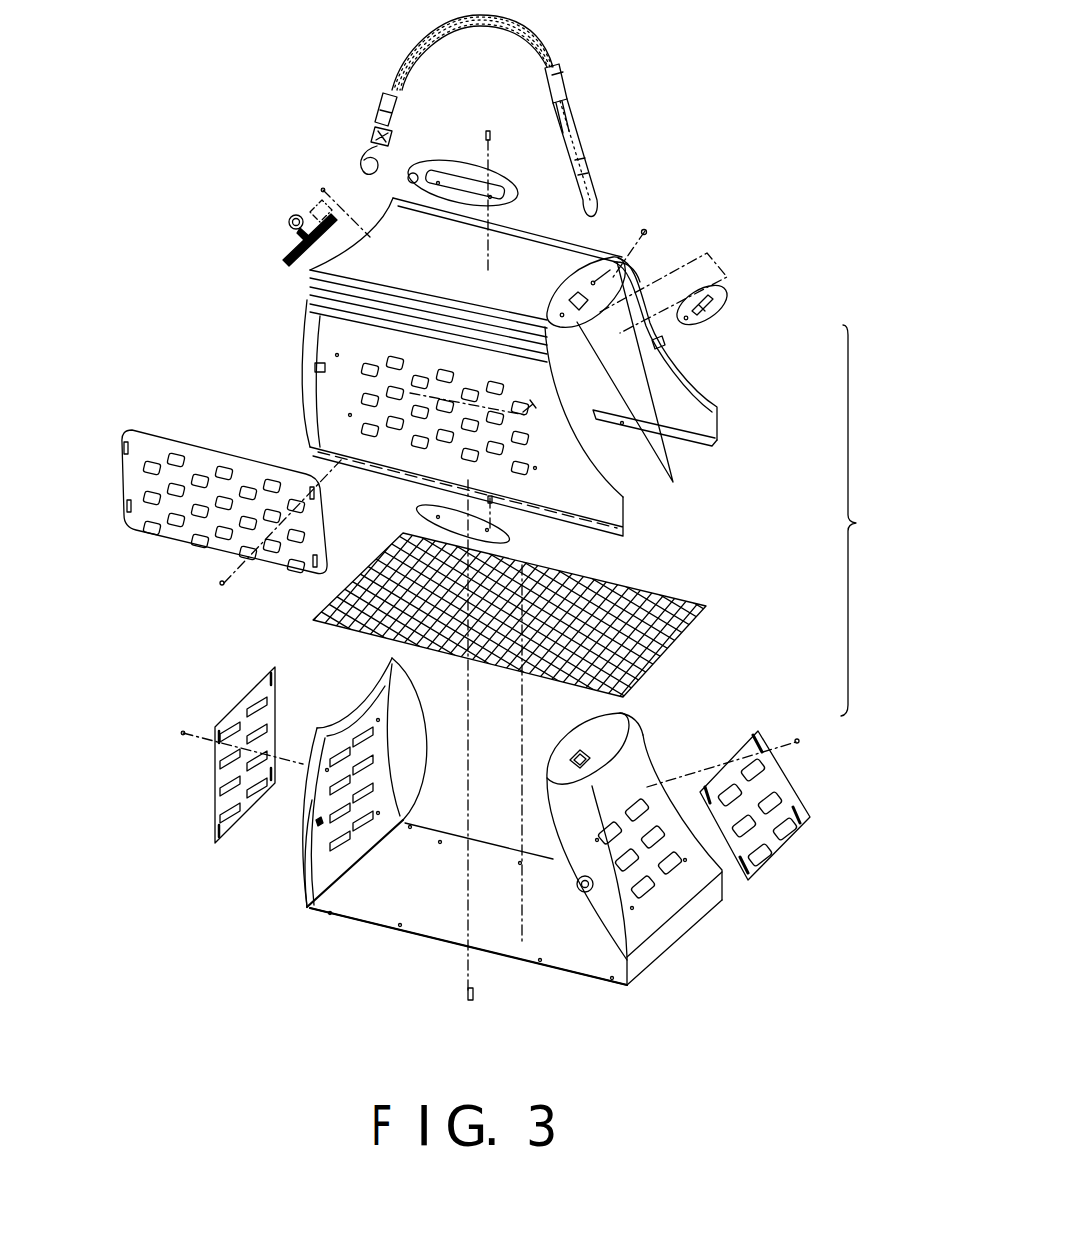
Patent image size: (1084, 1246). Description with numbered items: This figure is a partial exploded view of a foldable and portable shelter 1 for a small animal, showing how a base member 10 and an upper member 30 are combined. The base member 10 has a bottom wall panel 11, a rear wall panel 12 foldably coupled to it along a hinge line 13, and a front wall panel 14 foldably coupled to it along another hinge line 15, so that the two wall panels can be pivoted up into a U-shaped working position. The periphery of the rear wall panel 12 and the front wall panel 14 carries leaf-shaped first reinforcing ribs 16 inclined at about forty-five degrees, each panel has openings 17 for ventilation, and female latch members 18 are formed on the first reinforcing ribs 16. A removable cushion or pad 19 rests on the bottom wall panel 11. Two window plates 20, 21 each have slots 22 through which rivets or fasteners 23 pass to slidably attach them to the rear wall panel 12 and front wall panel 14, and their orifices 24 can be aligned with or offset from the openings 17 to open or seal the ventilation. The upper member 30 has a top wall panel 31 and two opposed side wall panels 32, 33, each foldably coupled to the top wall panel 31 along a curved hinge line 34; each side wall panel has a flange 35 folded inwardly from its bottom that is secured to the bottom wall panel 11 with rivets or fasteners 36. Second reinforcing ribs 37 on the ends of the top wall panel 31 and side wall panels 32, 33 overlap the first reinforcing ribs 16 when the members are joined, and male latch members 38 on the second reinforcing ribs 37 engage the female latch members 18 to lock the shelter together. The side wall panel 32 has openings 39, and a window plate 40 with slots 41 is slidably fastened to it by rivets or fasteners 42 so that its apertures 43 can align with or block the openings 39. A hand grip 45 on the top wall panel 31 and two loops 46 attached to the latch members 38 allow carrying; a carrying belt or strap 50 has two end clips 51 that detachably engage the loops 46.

The foldable and portable shelter 1 is at (794, 314).
The base member 10 is at (471, 857).
The bottom wall panel 11 is at (433, 925).
The rear wall panel 12 is at (327, 737).
The hinge line 13 is at (335, 878).
The front wall panel 14 is at (613, 873).
The hinge line 15 is at (623, 987).
The first reinforcing ribs 16 is at (583, 758).
The openings 17 is at (673, 863).
The latch members 18 is at (586, 893).
The cushion or pad 19 is at (655, 612).
The window plate 20 is at (222, 743).
The window plate 21 is at (748, 770).
The slots 22 is at (755, 737).
The rivets or fasteners 23 is at (183, 734).
The orifices 24 is at (262, 750).
The upper member 30 is at (509, 602).
The top wall panel 31 is at (572, 257).
The side wall panel 32 is at (434, 418).
The side wall panel 33 is at (690, 400).
The hinge line 34 is at (543, 230).
The flange 35 is at (690, 445).
The rivets or fasteners 36 is at (462, 998).
The second reinforcing ribs 37 is at (603, 450).
The latch members 38 is at (672, 350).
The openings 39 is at (447, 437).
The window plate 40 is at (209, 494).
The slots 41 is at (127, 505).
The rivets or fasteners 42 is at (224, 586).
The apertures 43 is at (201, 541).
The hand grip 45 is at (457, 163).
The rings or loops 46 is at (293, 216).
The carrying belt or strap 50 is at (548, 43).
The end clips 51 is at (357, 169).